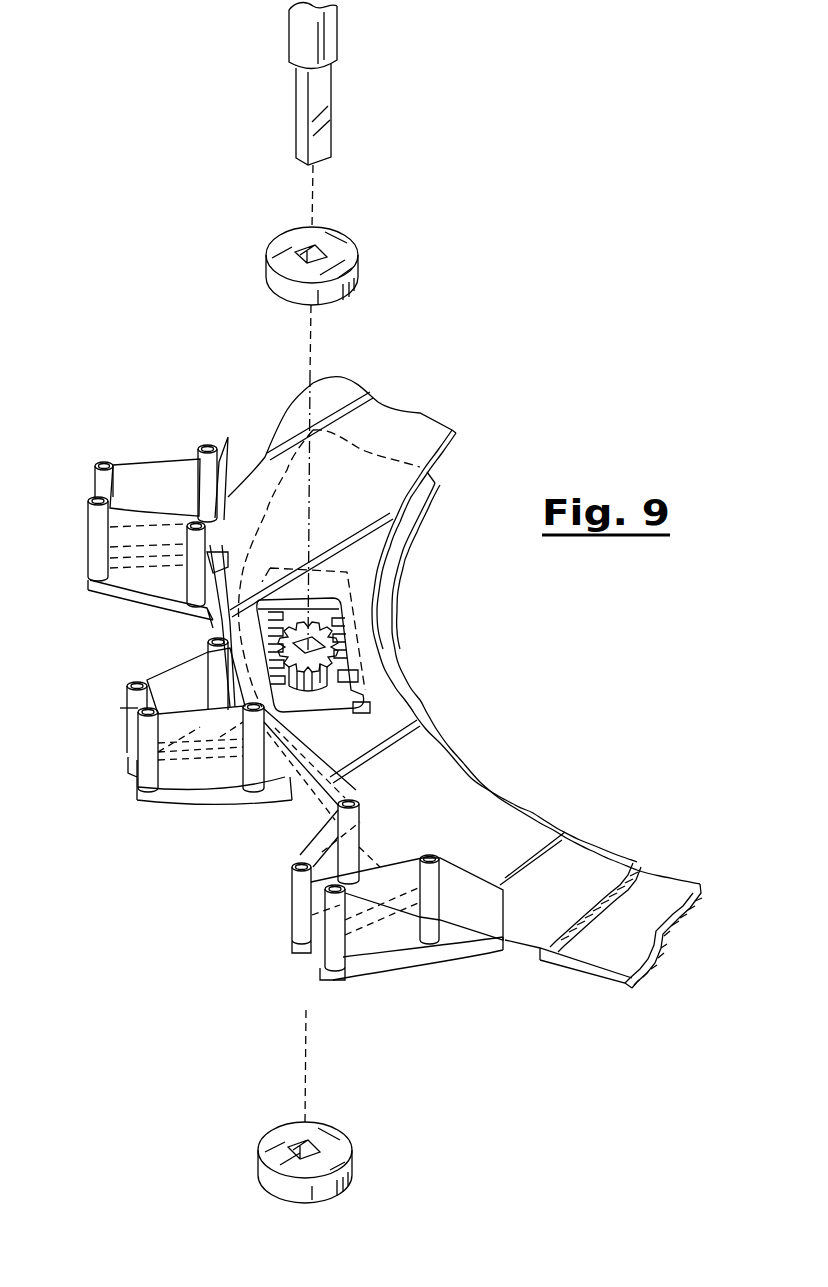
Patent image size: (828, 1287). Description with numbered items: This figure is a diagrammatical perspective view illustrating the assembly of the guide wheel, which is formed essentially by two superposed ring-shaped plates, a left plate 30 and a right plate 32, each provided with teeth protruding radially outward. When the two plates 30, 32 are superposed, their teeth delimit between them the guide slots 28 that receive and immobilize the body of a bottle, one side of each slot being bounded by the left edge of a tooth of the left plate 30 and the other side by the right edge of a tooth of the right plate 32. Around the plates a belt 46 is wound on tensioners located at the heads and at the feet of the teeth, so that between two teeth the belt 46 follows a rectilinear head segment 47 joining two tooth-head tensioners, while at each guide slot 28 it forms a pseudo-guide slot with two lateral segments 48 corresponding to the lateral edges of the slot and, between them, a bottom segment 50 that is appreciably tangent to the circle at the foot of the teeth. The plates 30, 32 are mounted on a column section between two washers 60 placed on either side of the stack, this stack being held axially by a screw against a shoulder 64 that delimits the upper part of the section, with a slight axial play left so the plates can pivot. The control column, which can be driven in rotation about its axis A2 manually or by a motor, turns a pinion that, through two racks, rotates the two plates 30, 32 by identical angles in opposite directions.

The shoulder 64 is at (293, 66).
The axis A2 is at (312, 192).
The washer 60 is at (340, 247).
The bottom segment 50 is at (343, 782).
The left plate 30 is at (657, 887).
The right plate 32 is at (587, 867).
The guide slot 28 is at (224, 851).
The rectilinear head segment 47 is at (127, 707).
The lateral segment 48 is at (207, 728).
The belt 46 is at (486, 898).